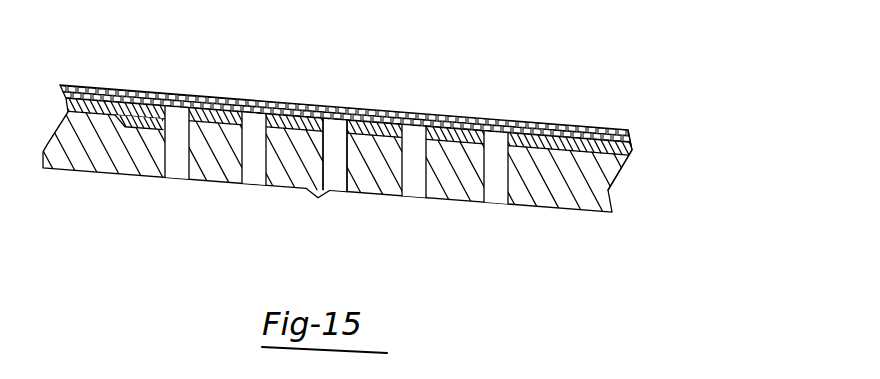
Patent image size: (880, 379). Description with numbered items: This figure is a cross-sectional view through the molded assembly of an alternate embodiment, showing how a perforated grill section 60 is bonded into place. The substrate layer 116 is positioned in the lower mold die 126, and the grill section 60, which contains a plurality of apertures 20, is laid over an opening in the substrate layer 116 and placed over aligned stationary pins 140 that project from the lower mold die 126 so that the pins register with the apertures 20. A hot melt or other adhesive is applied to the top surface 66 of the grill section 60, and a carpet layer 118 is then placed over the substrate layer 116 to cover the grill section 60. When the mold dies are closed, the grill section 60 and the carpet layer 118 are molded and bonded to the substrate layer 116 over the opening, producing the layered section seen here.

The aperture 20 is at (326, 135).
The perforated grill section 60 is at (140, 130).
The top surface 66 is at (457, 115).
The substrate layer 116 is at (608, 153).
The carpet layer 118 is at (216, 94).
The lower mold die 126 is at (545, 188).
The stationary pins 140 is at (318, 200).